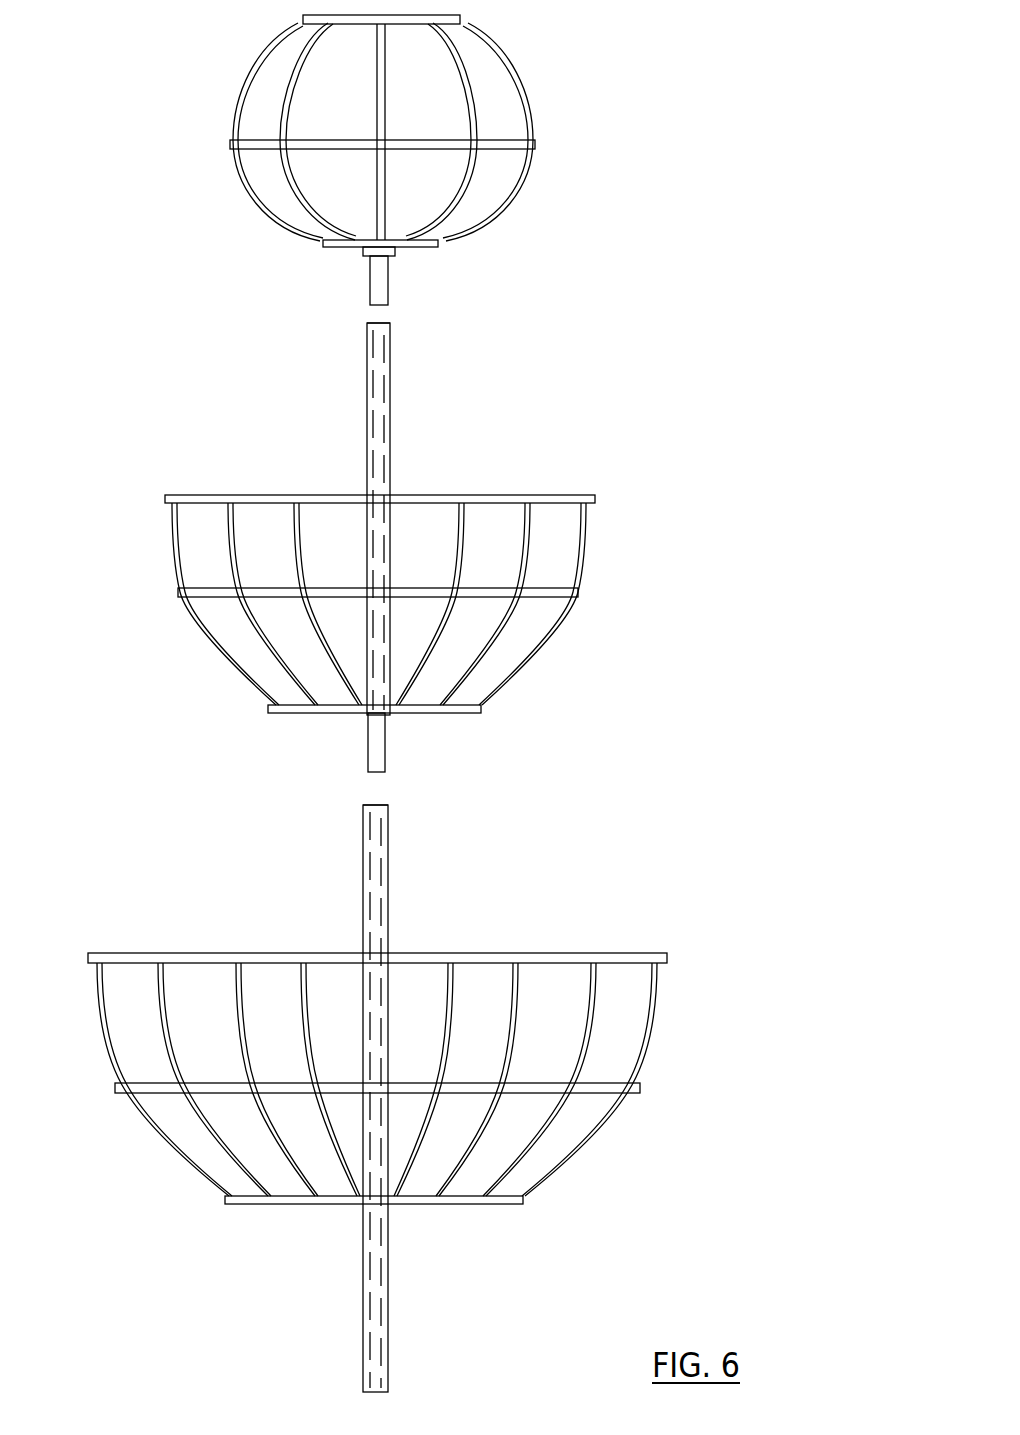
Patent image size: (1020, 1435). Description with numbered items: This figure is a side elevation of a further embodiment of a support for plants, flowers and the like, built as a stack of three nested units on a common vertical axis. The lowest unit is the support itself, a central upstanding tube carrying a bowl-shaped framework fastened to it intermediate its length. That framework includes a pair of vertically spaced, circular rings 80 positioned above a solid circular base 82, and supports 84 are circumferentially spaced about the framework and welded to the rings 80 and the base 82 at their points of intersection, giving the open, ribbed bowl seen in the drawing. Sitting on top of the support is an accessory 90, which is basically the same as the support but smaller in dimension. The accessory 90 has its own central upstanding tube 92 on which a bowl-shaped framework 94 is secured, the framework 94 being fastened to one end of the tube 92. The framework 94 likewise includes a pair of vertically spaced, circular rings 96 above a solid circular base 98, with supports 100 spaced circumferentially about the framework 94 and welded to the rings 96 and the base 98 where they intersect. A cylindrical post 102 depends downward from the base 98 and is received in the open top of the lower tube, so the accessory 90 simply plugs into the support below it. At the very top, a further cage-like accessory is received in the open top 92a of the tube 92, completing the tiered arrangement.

The accessory 90 is at (609, 418).
The framework 94 is at (149, 462).
The central upstanding tube 92 is at (387, 420).
The open top 92a is at (377, 326).
The circular rings 96 is at (508, 498).
The supports 100 is at (590, 553).
The solid circular base 98 is at (458, 712).
The cylindrical post 102 is at (372, 738).
The circular rings 80 is at (497, 953).
The supports 84 is at (173, 1040).
The solid circular base 82 is at (497, 1205).